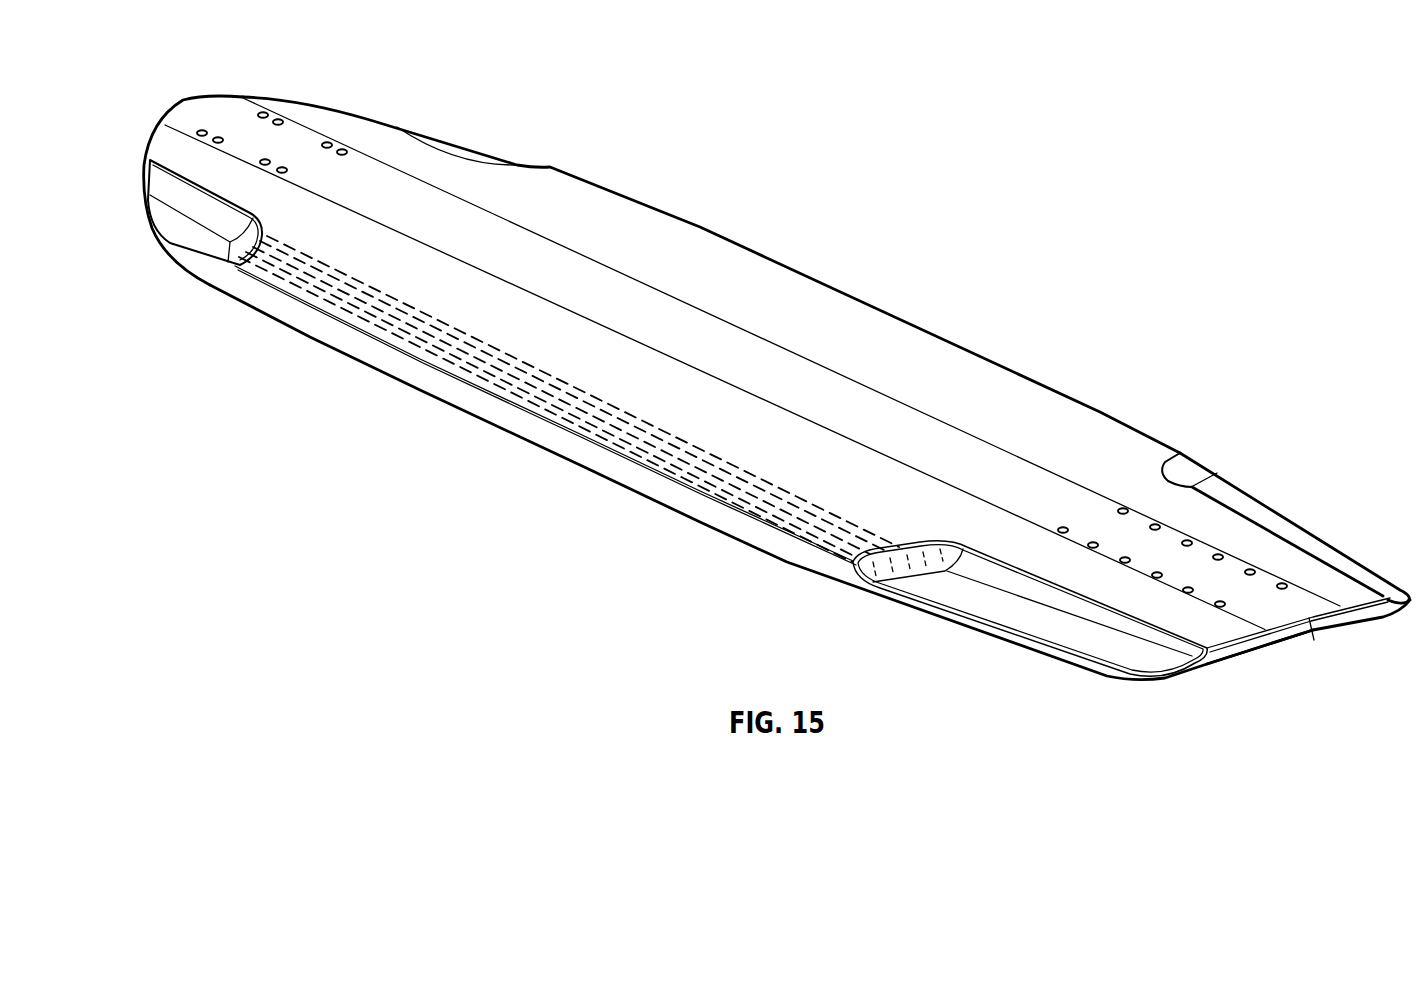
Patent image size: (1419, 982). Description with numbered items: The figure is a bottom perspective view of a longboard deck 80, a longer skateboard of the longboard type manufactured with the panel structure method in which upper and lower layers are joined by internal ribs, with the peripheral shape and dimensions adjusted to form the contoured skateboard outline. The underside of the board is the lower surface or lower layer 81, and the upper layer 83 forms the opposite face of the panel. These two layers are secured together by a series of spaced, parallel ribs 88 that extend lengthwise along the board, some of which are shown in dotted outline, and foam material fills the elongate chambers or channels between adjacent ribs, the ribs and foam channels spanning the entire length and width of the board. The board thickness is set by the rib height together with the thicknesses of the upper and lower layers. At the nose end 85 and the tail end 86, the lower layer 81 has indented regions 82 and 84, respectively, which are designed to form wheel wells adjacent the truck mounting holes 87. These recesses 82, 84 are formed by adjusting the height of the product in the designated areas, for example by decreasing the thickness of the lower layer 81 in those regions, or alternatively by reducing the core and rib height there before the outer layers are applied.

The longboard deck 80 is at (1062, 193).
The lower layer 81 is at (812, 297).
The indented region 82 is at (465, 145).
The upper layer 83 is at (702, 522).
The indented region 84 is at (966, 605).
The nose end 85 is at (181, 99).
The tail end 86 is at (1327, 637).
The truck mounting holes 87 is at (265, 160).
The ribs 88 is at (490, 390).